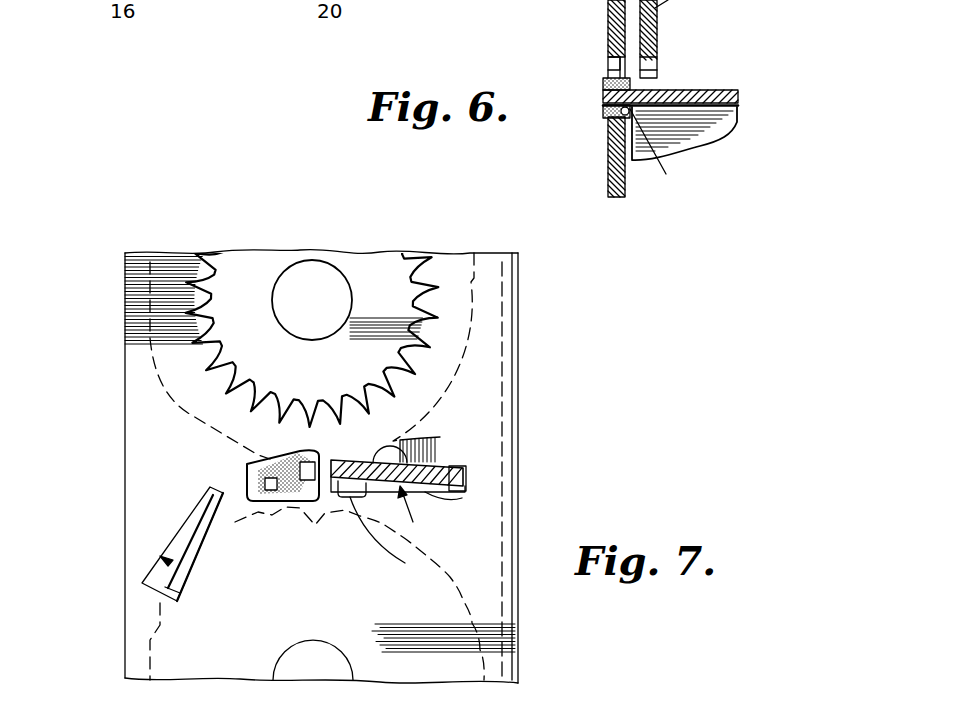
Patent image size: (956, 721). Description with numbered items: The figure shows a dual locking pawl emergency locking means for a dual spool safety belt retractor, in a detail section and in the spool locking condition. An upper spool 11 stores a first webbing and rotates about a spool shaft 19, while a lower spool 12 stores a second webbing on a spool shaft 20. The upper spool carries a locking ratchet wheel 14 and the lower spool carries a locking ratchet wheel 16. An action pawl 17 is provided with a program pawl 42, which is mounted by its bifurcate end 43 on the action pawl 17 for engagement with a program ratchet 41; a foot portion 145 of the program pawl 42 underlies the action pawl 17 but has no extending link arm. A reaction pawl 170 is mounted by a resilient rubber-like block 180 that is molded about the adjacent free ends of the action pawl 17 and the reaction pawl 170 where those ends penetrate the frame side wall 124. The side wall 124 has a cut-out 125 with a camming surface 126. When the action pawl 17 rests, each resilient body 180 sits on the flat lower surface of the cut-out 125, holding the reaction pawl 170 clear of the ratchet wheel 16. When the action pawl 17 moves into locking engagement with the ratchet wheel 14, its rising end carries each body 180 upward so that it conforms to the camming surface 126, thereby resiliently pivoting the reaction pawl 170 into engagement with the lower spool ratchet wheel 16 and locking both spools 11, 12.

In FIG. 7, the upper spool 11 is at (482, 273).
In FIG. 7, the lower spool 12 is at (482, 609).
In FIG. 7, the locking ratchet wheel 14 is at (188, 402).
In FIG. 7, the locking ratchet wheel 16 is at (148, 660).
In FIG. 6, the action pawl 17 is at (703, 93).
In FIG. 7, the action pawl 17 is at (467, 480).
In FIG. 7, the spool shaft 19 is at (320, 280).
In FIG. 7, the spool shaft 20 is at (337, 668).
In FIG. 7, the program ratchet 41 is at (242, 273).
In FIG. 7, the program pawl 42 is at (357, 459).
In FIG. 7, the bifurcate end 43 is at (457, 463).
In FIG. 6, the side wall 124 is at (608, 174).
In FIG. 7, the side wall 124 is at (125, 272).
In FIG. 6, the cut-out 125 is at (662, 156).
In FIG. 7, the cut-out 125 is at (273, 503).
In FIG. 6, the camming surface 126 is at (608, 64).
In FIG. 7, the camming surface 126 is at (289, 450).
In FIG. 7, the foot portion 145 is at (393, 538).
In FIG. 6, the reaction pawl 170 is at (710, 149).
In FIG. 7, the reaction pawl 170 is at (196, 495).
In FIG. 6, the rubber-like block 180 is at (603, 110).
In FIG. 7, the rubber-like block 180 is at (293, 489).